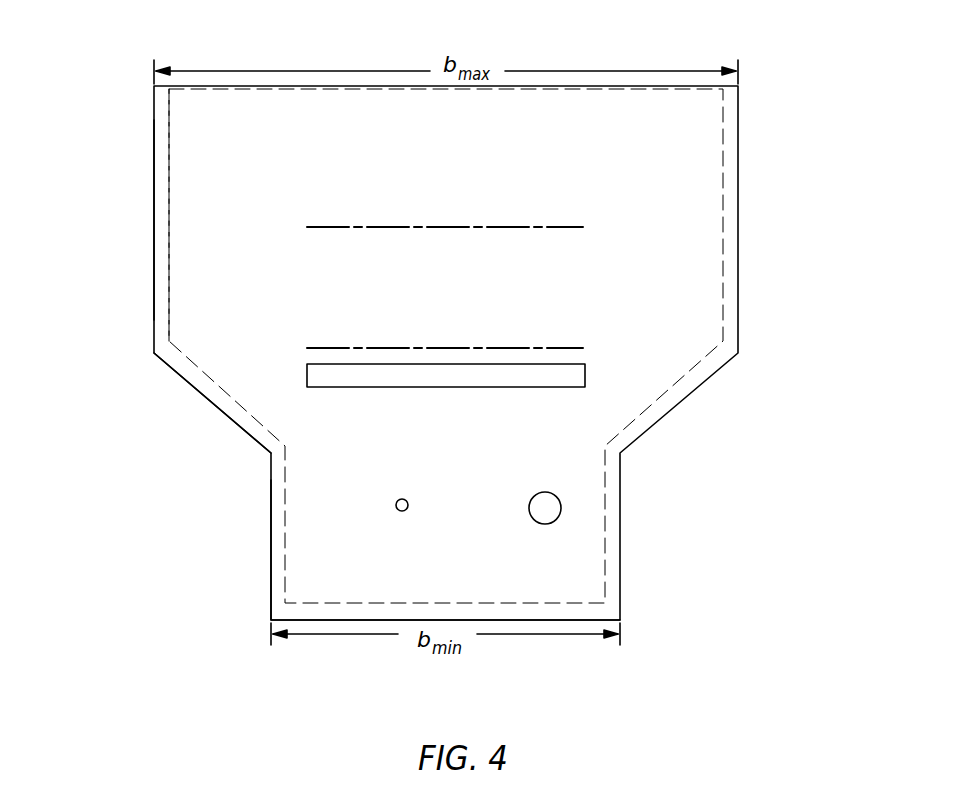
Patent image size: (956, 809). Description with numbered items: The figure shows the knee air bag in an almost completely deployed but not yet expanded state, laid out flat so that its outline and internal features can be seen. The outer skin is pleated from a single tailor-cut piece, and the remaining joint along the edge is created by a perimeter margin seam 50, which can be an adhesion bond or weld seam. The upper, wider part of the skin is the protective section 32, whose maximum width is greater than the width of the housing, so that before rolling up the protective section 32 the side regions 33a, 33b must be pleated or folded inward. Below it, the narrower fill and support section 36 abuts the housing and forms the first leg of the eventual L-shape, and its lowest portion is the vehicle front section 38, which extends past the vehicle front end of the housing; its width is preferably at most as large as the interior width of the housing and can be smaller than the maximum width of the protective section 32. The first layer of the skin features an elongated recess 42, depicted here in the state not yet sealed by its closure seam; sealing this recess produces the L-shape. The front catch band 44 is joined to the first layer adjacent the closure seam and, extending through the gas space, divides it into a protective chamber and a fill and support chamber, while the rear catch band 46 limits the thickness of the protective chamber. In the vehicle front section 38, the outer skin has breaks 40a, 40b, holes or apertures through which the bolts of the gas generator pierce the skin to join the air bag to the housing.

The protective section 32 is at (652, 162).
The side region 33a is at (688, 205).
The side region 33b is at (217, 160).
The perimeter margin seam 50 is at (168, 225).
The rear catch band 46 is at (353, 228).
The front catch band 44 is at (537, 348).
The elongated recess 42 is at (562, 375).
The fill and support section 36 is at (348, 420).
The vehicle front section 38 is at (323, 558).
The break 40a is at (550, 509).
The break 40b is at (397, 510).